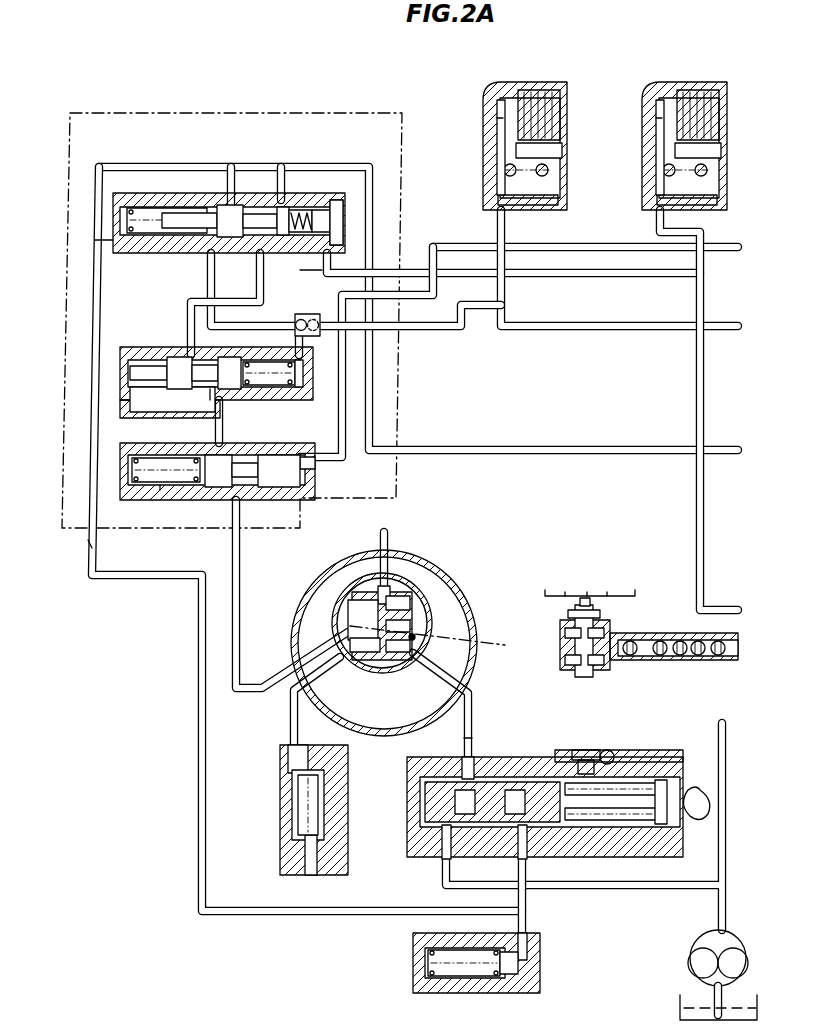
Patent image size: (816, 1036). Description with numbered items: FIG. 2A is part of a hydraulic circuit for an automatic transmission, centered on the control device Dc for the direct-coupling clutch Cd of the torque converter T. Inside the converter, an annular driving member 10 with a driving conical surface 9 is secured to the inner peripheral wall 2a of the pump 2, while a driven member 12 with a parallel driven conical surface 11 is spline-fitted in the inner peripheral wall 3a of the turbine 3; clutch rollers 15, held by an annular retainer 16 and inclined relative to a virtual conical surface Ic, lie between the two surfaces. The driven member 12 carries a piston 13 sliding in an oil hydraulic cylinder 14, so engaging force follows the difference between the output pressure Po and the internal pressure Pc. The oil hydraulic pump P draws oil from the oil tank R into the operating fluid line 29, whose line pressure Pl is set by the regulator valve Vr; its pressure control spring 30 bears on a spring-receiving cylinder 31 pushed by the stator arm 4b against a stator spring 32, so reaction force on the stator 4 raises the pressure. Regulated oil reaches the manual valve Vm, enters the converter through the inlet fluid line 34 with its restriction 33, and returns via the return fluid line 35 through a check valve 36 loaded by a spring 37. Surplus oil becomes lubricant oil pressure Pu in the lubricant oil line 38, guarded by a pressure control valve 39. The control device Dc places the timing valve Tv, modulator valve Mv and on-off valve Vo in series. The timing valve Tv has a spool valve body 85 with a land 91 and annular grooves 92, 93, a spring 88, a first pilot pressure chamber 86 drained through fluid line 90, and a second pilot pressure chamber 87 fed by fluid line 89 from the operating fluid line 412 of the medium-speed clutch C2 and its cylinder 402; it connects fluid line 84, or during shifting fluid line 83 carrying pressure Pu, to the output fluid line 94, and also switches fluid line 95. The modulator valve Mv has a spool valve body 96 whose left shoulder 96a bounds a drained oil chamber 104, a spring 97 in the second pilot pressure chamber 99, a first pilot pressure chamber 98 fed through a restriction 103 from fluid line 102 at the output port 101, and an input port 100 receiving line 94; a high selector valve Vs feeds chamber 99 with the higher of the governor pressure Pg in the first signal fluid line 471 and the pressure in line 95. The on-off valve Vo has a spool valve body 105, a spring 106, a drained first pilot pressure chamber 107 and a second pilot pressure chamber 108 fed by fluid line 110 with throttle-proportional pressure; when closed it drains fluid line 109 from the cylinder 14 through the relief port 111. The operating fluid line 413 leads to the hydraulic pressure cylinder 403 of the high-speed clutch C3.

The control device Dc is at (318, 113).
The lubricant oil pressure Pu is at (196, 165).
The fluid line 109 is at (232, 635).
The fluid line 95 is at (210, 280).
The annular groove 93 is at (255, 270).
The output fluid line 94 is at (300, 270).
The fluid line 89 is at (630, 277).
The operating fluid line 412 is at (712, 244).
The second pilot pressure chamber 108 is at (312, 482).
The operating fluid line 413 is at (616, 330).
The governor pressure Pg is at (446, 331).
The fluid line 110 is at (712, 256).
The first signal fluid line 471 is at (712, 300).
The fluid line 102 is at (222, 431).
The torque converter T is at (392, 540).
The return fluid line 35 is at (290, 720).
The inlet fluid line 34 is at (472, 707).
The restriction 33 is at (472, 738).
The line pressure Pl is at (717, 730).
The operating fluid line 29 is at (727, 777).
The lubricant oil line 38 is at (528, 918).
The fluid line 84 is at (372, 190).
The first pilot pressure chamber 86 is at (140, 208).
The spring 88 is at (178, 213).
The spool valve body 85 is at (232, 205).
The land 91 is at (283, 207).
The annular groove 92 is at (302, 210).
The second pilot pressure chamber 87 is at (336, 218).
The timing valve Tv is at (354, 179).
The fluid line 90 is at (113, 240).
The modulator valve Mv is at (136, 319).
The high selector valve Vs is at (317, 305).
The first pilot pressure chamber 98 is at (128, 367).
The restriction 103 is at (132, 398).
The left shoulder 96a is at (160, 356).
The input port 100 is at (178, 357).
The spool valve body 96 is at (230, 362).
The spring 97 is at (276, 353).
The second pilot pressure chamber 99 is at (303, 376).
The output port 101 is at (212, 395).
The output pressure Po is at (232, 427).
The oil chamber 104 is at (165, 455).
The first pilot pressure chamber 107 is at (134, 468).
The spring 106 is at (160, 490).
The spool valve body 105 is at (216, 488).
The relief port 111 is at (270, 488).
The on-off valve Vo is at (186, 511).
The fluid line 83 is at (90, 545).
The pump 2 is at (432, 576).
The turbine 3 is at (338, 572).
The inner peripheral wall 3a is at (338, 595).
The inner peripheral wall 2a is at (404, 582).
The annular driving member 10 is at (420, 595).
The driving conical surface 9 is at (412, 615).
The piston 13 is at (354, 612).
The oil hydraulic cylinder 14 is at (350, 630).
The annular retainer 16 is at (415, 640).
The virtual conical surface Ic is at (430, 629).
The direct-coupling clutch Cd is at (373, 579).
The driven member 12 is at (362, 660).
The clutch rollers 15 is at (375, 660).
The driven conical surface 11 is at (392, 662).
The internal pressure Pc is at (420, 670).
The stator 4 is at (368, 735).
The spring 37 is at (292, 840).
The check valve 36 is at (296, 797).
The regulator valve Vr is at (566, 840).
The pressure control spring 30 is at (655, 822).
The stator spring 32 is at (607, 750).
The spring-receiving cylinder 31 is at (656, 780).
The stator arm 4b is at (698, 812).
The pressure control valve 39 is at (551, 994).
The oil hydraulic pump P is at (740, 932).
The oil tank R is at (748, 1018).
The manual valve Vm is at (670, 628).
The high-speed clutch C3 is at (550, 81).
The hydraulic pressure cylinder 403 is at (497, 118).
The medium-speed clutch C2 is at (696, 80).
The cylinder 402 is at (656, 118).